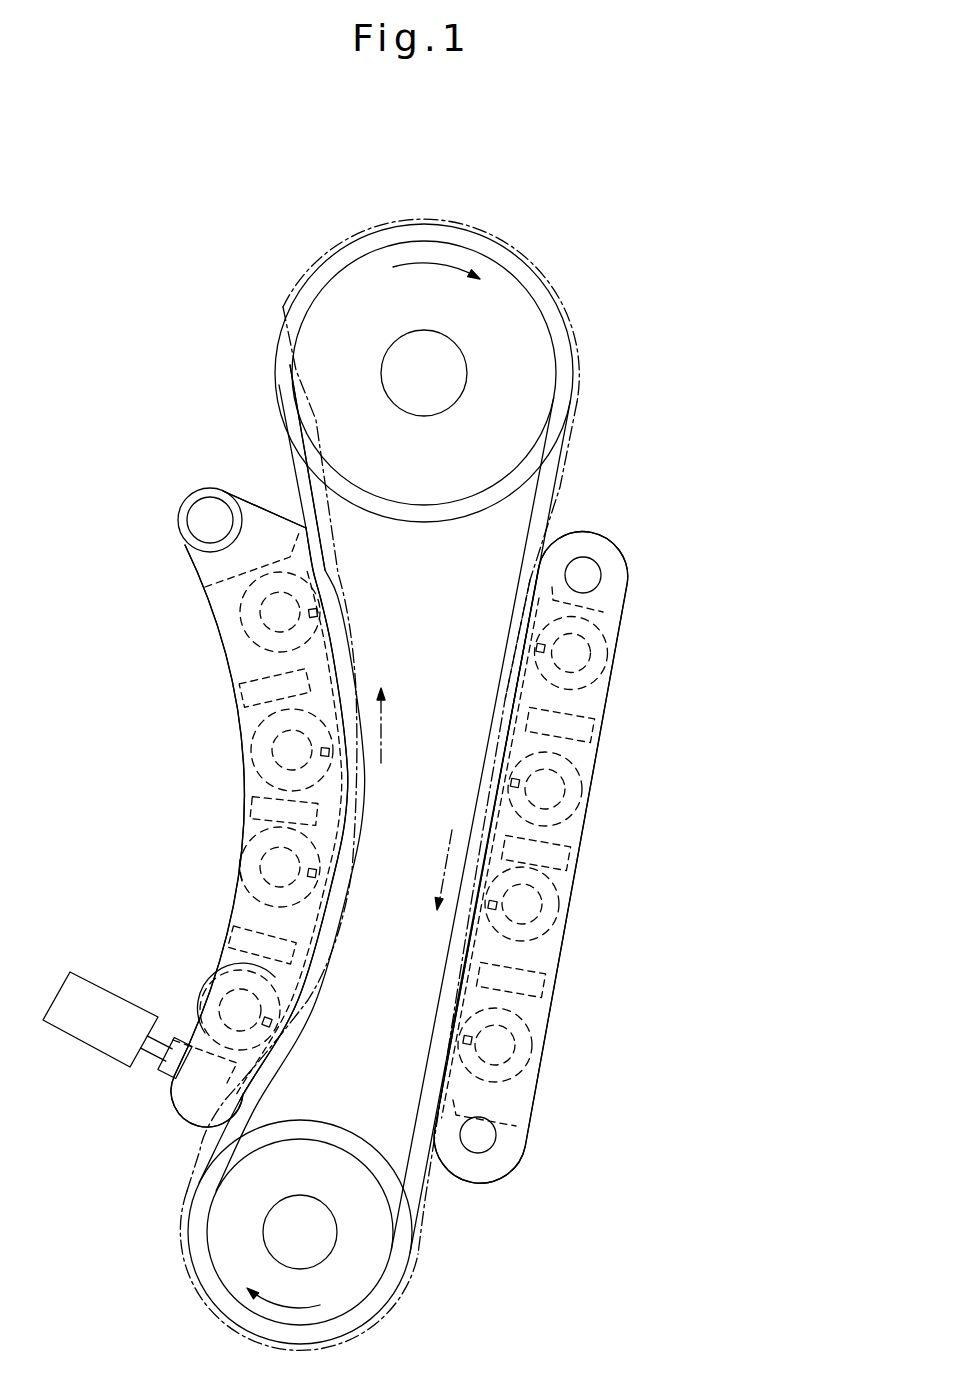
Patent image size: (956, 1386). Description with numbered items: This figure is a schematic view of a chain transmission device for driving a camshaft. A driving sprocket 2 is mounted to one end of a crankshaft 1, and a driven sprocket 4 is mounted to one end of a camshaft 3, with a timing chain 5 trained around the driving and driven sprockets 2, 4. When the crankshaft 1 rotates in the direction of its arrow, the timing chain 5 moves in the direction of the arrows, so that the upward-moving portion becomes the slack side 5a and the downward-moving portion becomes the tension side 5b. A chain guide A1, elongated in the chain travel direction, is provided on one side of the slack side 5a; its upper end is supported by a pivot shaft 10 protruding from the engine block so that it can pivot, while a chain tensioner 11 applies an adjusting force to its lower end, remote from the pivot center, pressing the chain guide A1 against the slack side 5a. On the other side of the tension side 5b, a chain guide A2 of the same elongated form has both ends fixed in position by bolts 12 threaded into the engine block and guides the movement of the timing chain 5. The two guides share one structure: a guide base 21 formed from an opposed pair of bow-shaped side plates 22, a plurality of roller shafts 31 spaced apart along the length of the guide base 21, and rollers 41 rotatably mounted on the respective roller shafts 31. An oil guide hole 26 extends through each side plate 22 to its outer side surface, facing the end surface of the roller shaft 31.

The crankshaft 1 is at (272, 1222).
The driving sprocket 2 is at (203, 1273).
The camshaft 3 is at (385, 372).
The driven sprocket 4 is at (375, 248).
The timing chain 5 is at (580, 463).
The slack side 5a is at (333, 563).
The tension side 5b is at (508, 657).
The pivot shaft 10 is at (205, 519).
The chain tensioner 11 is at (69, 962).
The bolts 12 is at (588, 573).
The guide base 21 is at (205, 629).
The side plates 22 is at (242, 668).
The oil guide hole 26 is at (317, 878).
The roller shafts 31 is at (238, 878).
The rollers 41 is at (245, 905).
The chain guide A1 is at (190, 572).
The chain guide A2 is at (640, 624).